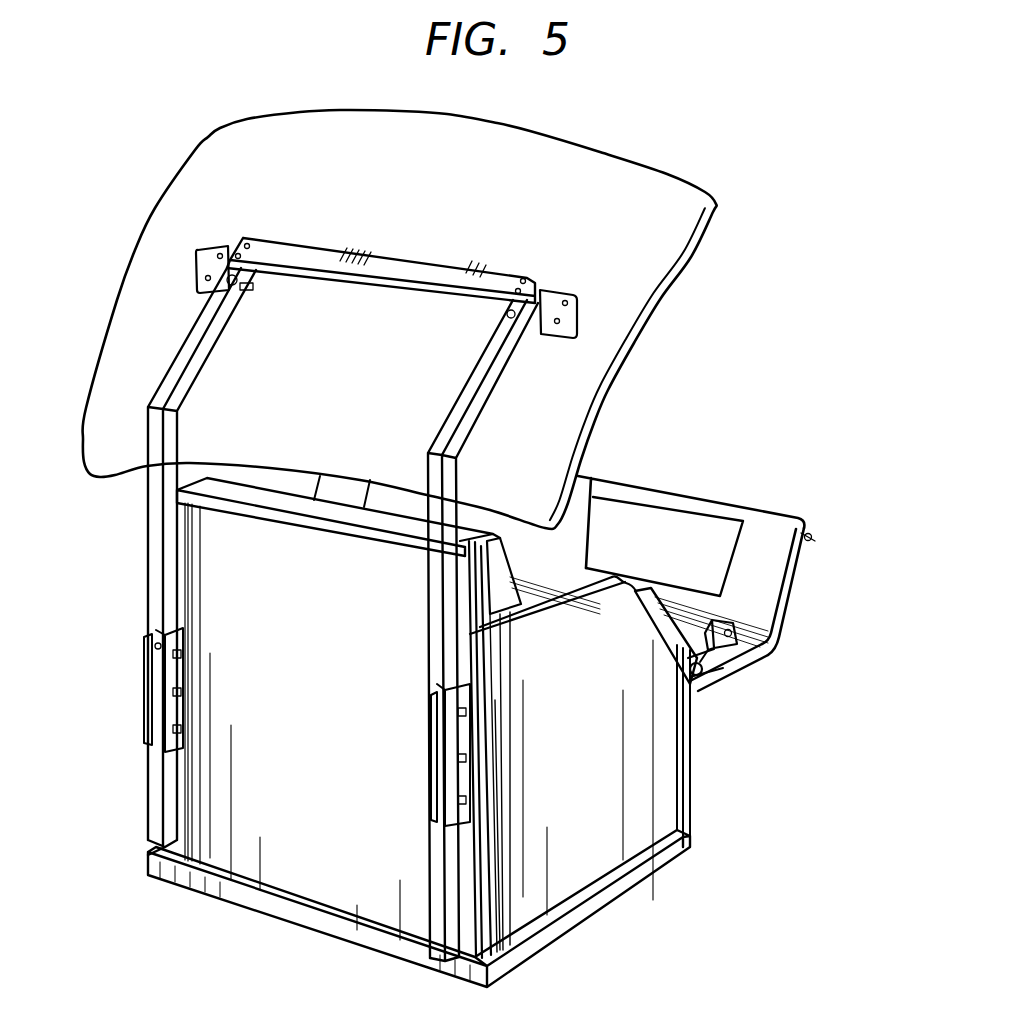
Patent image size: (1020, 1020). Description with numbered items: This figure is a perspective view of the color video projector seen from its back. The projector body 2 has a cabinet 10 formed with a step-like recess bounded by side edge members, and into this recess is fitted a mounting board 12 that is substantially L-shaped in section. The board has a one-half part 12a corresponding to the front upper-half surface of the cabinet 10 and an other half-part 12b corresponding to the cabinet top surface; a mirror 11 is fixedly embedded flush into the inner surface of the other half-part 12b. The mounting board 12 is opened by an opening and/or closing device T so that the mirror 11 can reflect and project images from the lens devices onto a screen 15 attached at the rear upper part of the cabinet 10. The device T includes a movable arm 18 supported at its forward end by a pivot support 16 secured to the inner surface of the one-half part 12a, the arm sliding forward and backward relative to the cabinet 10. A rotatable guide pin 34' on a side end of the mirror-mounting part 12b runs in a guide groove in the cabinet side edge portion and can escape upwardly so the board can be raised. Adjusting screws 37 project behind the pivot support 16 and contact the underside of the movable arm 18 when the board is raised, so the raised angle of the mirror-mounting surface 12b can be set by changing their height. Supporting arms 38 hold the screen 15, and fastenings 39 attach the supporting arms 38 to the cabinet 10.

The projector body 2 is at (317, 927).
The cabinet 10 is at (677, 763).
The mirror 11 is at (670, 527).
The mounting board 12 is at (760, 508).
The one-half part 12a is at (776, 648).
The other half-part 12b is at (762, 558).
The screen 15 is at (642, 270).
The pivot support 16 is at (752, 652).
The movable arm 18 is at (672, 663).
The guide pin 34' is at (839, 507).
The adjusting screws 37 is at (722, 680).
The supporting arms 38 is at (157, 612).
The fastenings 39 is at (173, 713).
The opening and/or closing device T is at (658, 618).